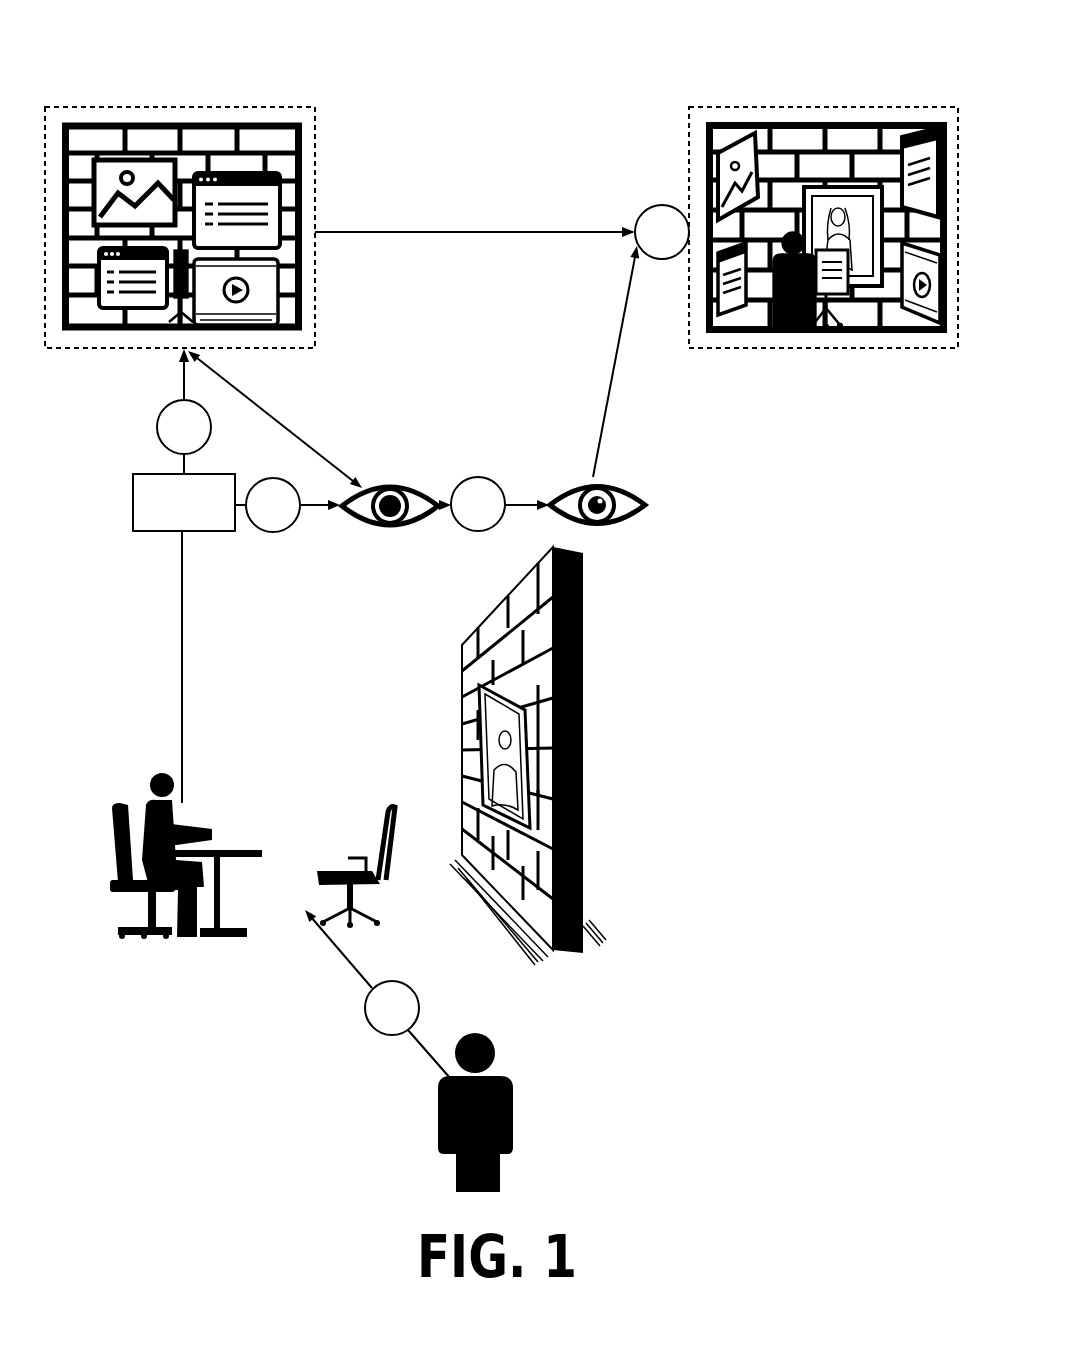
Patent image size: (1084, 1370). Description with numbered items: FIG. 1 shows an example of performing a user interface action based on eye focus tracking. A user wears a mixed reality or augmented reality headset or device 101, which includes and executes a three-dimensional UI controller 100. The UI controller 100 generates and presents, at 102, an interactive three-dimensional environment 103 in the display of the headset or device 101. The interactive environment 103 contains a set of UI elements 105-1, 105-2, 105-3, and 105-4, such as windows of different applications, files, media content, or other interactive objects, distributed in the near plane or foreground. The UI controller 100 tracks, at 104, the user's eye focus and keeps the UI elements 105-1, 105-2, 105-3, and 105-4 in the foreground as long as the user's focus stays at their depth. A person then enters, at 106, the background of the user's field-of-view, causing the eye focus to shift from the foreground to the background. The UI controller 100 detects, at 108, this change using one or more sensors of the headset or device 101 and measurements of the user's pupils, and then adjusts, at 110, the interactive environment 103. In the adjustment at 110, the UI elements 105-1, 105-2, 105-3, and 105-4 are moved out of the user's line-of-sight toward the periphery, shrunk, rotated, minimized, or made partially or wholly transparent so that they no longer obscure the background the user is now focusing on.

The 3D UI controller 100 is at (172, 513).
The headset or device 101 is at (180, 800).
The generating and presenting the interactive 3D environment 102 is at (172, 435).
The interactive 3D environment 103 is at (178, 101).
The tracking the user's eye focus 104 is at (261, 513).
The UI element 105-1 is at (112, 165).
The UI element 105-2 is at (130, 292).
The UI element 105-3 is at (268, 170).
The UI element 105-4 is at (265, 289).
The person entering the background 106 is at (380, 1016).
The detecting the change in eye focus 108 is at (466, 512).
The adjusting the interactive 3D environment 110 is at (650, 240).